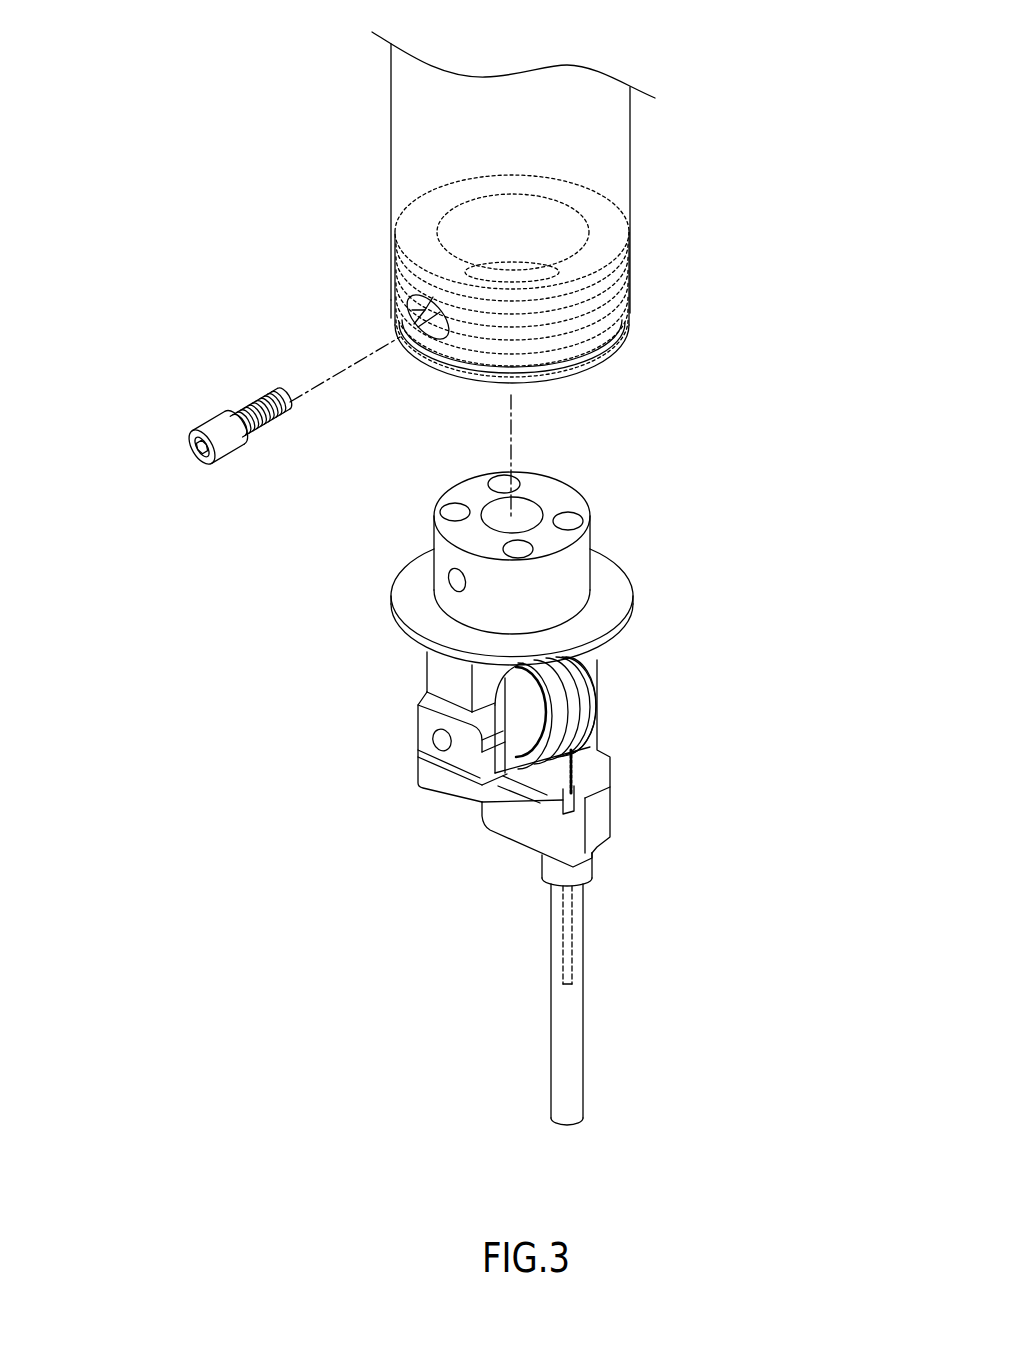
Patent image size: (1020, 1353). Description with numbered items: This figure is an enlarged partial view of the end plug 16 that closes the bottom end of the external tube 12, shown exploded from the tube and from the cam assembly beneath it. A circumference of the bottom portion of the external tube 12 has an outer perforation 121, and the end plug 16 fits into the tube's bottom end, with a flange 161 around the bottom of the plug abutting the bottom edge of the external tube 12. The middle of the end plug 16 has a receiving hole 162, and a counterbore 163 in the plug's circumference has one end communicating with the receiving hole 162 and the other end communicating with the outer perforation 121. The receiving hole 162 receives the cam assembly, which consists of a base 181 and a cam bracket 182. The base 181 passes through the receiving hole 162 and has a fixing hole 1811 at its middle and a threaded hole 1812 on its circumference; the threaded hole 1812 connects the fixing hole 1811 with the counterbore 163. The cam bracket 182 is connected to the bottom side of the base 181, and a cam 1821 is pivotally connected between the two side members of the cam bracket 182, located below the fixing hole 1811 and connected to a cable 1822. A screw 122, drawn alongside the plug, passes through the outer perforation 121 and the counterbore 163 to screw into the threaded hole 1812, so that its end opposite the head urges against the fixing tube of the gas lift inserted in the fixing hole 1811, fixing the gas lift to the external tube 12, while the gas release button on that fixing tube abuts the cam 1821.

The tube 12 is at (630, 155).
The end plug 16 is at (433, 193).
The flange 161 is at (615, 347).
The receiving hole 162 is at (433, 227).
The outer perforation 121 is at (412, 300).
The counterbore 163 is at (433, 298).
The screw 122 is at (188, 458).
The base 181 is at (590, 552).
The fixing hole 1811 is at (523, 500).
The threaded hole 1812 is at (448, 583).
The cam bracket 182 is at (480, 678).
The cam 1821 is at (587, 690).
The cable 1822 is at (572, 920).